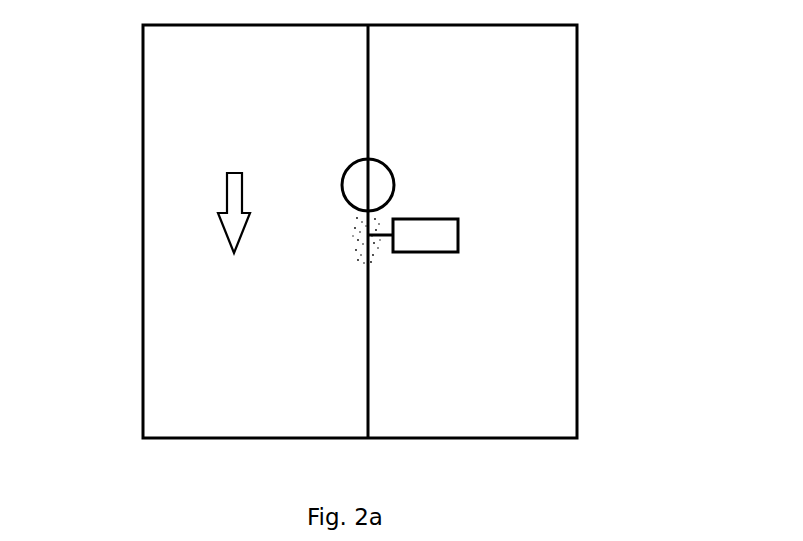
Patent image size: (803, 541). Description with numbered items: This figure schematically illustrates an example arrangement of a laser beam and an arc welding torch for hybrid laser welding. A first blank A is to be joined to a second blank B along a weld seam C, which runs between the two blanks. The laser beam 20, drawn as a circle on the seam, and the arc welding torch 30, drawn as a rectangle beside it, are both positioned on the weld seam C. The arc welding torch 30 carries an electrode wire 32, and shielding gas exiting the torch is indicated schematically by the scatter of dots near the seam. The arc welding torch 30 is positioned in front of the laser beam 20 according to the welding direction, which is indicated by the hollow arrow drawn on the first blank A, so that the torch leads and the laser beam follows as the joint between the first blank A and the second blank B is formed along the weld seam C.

The laser beam 20 is at (350, 165).
The arc welding torch 30 is at (420, 223).
The electrode wire 32 is at (385, 247).
The first blank A is at (228, 278).
The second blank B is at (530, 73).
The weld seam C is at (363, 357).